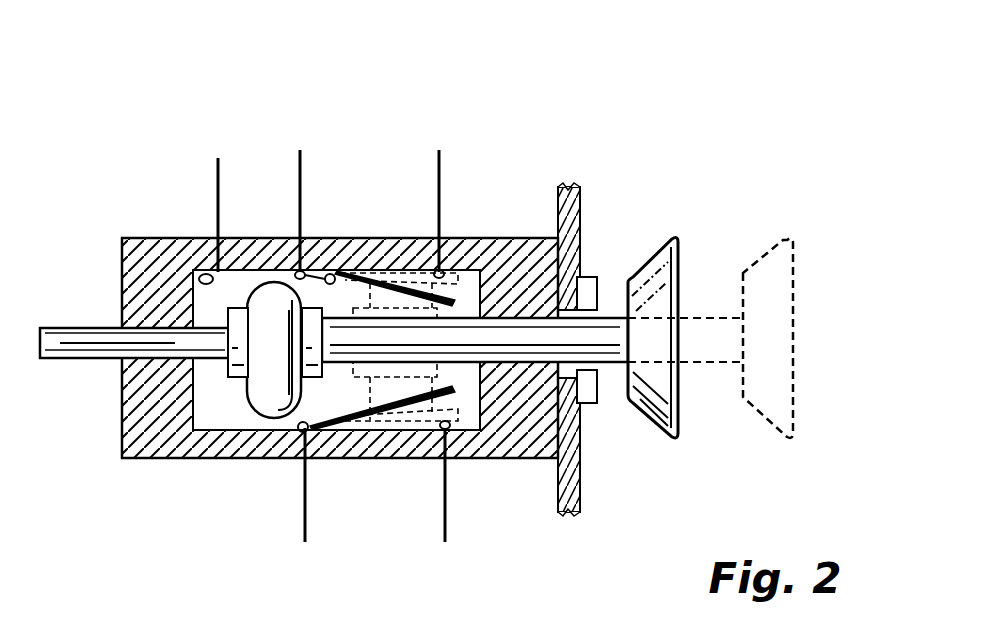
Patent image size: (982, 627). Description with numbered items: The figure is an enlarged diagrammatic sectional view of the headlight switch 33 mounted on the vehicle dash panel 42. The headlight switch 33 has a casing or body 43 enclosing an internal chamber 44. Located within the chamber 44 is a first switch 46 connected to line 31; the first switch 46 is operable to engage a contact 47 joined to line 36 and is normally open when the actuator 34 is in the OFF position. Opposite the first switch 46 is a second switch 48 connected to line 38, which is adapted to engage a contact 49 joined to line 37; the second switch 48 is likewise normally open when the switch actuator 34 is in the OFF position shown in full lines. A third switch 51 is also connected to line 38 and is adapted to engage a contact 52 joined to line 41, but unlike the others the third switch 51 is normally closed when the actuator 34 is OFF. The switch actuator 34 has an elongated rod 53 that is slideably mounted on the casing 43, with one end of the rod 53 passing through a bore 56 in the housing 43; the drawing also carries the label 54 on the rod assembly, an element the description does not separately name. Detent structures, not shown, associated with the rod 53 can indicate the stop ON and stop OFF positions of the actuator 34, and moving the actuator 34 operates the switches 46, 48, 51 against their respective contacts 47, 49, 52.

The headlight switch 33 is at (446, 123).
The switch actuator 34 is at (656, 278).
The line 31 is at (305, 527).
The line 36 is at (445, 510).
The line 37 is at (437, 180).
The line 38 is at (298, 157).
The line 41 is at (217, 182).
The vehicle dash panel 42 is at (557, 186).
The casing 43 is at (150, 238).
The internal chamber 44 is at (210, 414).
The first switch 46 is at (335, 432).
The contact 47 is at (517, 457).
The second switch 48 is at (312, 258).
The contact 49 is at (436, 262).
The third switch 51 is at (240, 243).
The contact 52 is at (203, 240).
The elongated rod 53 is at (533, 337).
The shaft extension / magnet 54 is at (157, 325).
The bore 56 is at (581, 450).